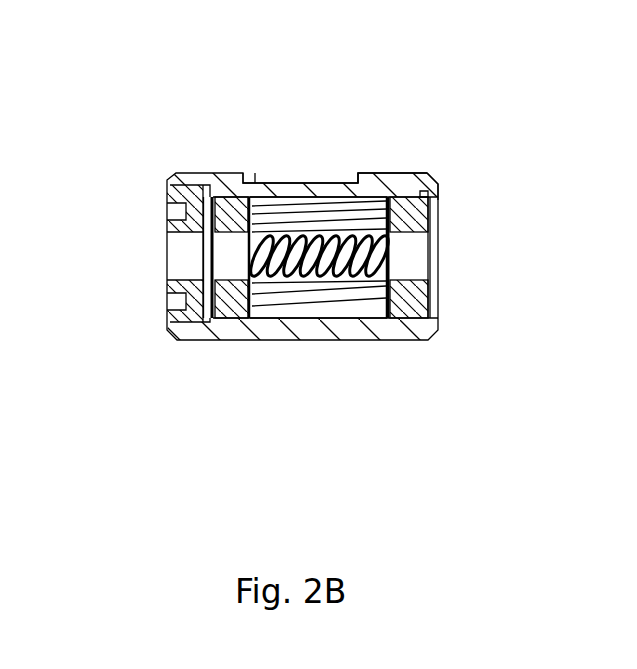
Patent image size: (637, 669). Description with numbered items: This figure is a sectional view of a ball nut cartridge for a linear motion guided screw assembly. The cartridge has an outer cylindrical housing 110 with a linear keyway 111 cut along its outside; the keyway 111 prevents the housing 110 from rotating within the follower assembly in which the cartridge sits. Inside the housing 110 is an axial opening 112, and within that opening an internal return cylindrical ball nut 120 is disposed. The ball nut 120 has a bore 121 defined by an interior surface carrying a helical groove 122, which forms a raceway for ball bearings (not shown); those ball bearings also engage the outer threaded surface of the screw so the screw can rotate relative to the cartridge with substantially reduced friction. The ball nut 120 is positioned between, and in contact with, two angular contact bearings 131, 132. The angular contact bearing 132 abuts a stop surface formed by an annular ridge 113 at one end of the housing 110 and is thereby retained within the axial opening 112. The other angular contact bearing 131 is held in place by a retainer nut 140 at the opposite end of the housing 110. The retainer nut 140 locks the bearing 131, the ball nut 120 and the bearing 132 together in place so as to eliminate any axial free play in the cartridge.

The outer cylindrical housing 110 is at (213, 170).
The linear keyway 111 is at (303, 180).
The axial opening 112 is at (368, 181).
The annular ridge 113 is at (441, 187).
The internal return cylindrical ball nut 120 is at (258, 181).
The bore 121 is at (290, 285).
The helical groove 122 is at (341, 280).
The angular contact bearing 131 is at (226, 322).
The angular contact bearing 132 is at (412, 185).
The retainer nut 140 is at (165, 209).